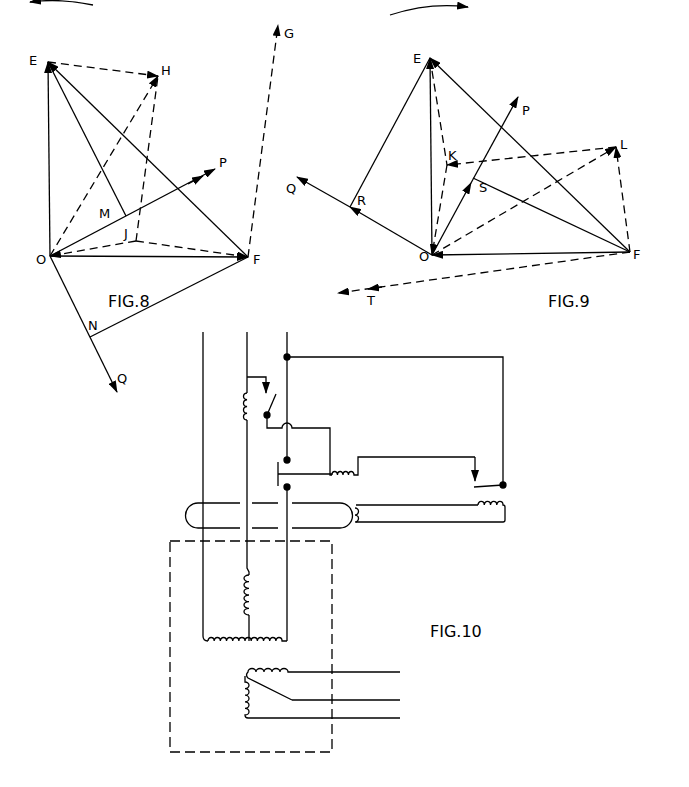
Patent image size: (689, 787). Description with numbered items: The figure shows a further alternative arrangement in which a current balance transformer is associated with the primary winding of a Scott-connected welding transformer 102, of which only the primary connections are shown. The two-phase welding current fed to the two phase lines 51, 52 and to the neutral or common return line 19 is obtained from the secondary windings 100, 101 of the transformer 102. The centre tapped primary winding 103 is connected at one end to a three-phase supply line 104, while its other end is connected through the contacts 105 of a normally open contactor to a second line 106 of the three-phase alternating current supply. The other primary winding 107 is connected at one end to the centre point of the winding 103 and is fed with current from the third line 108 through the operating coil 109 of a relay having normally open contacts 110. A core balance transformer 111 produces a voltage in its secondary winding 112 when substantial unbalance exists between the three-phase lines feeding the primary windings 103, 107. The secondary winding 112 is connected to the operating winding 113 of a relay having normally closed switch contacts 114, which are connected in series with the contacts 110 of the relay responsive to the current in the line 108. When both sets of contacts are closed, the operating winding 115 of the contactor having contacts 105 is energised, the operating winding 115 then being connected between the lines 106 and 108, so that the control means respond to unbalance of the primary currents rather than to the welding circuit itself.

The neutral or common return line 19 is at (360, 700).
The phase line 51 is at (363, 672).
The phase line 52 is at (363, 718).
The secondary winding 100 is at (292, 654).
The secondary winding 101 is at (242, 692).
The Scott-connected transformer 102 is at (332, 586).
The centre tapped primary winding 103 is at (250, 641).
The three-phase supply line 104 is at (202, 343).
The contactor contacts 105 is at (277, 472).
The second supply line 106 is at (288, 339).
The primary winding 107 is at (242, 587).
The third supply line 108 is at (248, 339).
The relay operating coil 109 is at (245, 397).
The relay contacts 110 is at (280, 399).
The core balance transformer 111 is at (228, 524).
The secondary winding 112 is at (358, 512).
The relay operating winding 113 is at (493, 511).
The switch contacts 114 is at (505, 484).
The contactor operating winding 115 is at (344, 470).